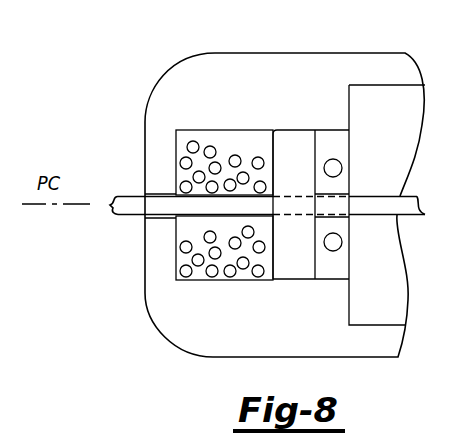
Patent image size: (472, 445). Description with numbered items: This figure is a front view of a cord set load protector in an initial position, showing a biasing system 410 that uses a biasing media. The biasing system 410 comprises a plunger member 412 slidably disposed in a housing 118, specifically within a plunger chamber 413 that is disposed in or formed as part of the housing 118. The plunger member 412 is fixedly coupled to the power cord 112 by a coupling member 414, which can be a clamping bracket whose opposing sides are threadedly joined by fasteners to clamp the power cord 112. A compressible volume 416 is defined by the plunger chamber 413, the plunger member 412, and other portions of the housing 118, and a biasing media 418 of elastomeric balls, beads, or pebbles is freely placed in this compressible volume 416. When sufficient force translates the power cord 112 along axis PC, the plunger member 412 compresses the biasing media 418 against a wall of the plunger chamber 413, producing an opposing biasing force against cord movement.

The power cord 112 is at (128, 196).
The housing 118 is at (283, 55).
The biasing system 410 is at (214, 44).
The plunger member 412 is at (307, 272).
The plunger chamber 413 is at (236, 130).
The coupling member 414 is at (348, 142).
The compressible volume 416 is at (200, 130).
The biasing media 418 is at (190, 274).